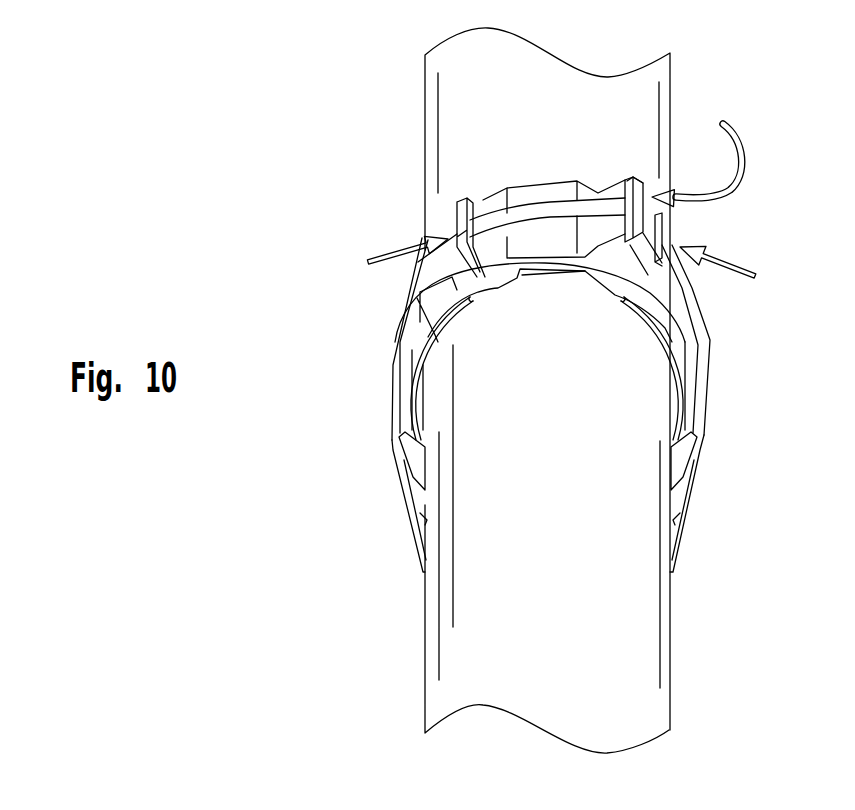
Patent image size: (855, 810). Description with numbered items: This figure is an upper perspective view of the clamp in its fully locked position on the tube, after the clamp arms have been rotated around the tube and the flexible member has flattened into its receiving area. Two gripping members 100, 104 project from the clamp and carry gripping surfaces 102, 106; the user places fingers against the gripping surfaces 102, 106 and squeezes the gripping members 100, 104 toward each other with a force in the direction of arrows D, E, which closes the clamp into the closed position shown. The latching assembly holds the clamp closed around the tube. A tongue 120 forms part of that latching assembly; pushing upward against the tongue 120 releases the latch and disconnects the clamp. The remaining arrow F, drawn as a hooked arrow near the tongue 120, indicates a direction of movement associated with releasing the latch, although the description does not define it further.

The gripping member 100 is at (474, 198).
The gripping surface 102 is at (417, 290).
The gripping member 104 is at (673, 228).
The gripping surface 106 is at (688, 296).
The tongue 120 is at (623, 175).
The arrow D is at (405, 248).
The arrow E is at (733, 262).
The direction arrow F is at (735, 128).